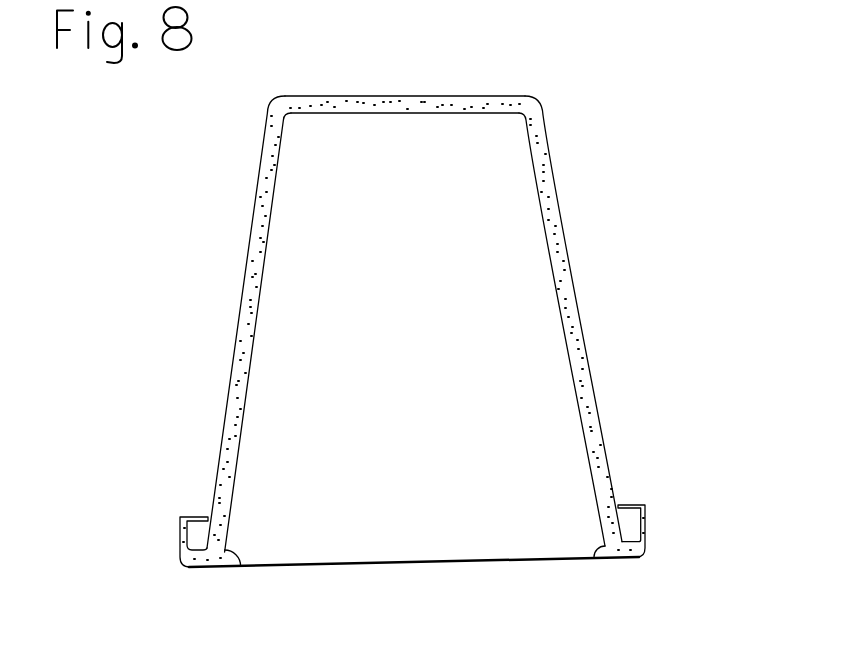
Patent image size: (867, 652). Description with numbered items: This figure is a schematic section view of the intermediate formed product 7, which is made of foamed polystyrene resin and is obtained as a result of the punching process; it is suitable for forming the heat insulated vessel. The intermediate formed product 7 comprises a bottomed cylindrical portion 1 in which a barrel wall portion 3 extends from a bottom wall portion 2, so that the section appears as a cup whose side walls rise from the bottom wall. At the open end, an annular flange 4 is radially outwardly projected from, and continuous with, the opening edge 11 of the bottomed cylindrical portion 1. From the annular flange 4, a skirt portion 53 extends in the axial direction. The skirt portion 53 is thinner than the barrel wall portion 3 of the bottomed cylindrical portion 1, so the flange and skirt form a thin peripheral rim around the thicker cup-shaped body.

The bottomed cylindrical portion 1 is at (430, 279).
The bottom wall portion 2 is at (405, 62).
The barrel wall portion 3 is at (577, 330).
The annular flange 4 is at (628, 558).
The intermediate formed product 7 is at (449, 95).
The opening edge 11 is at (232, 562).
The skirt portion 53 is at (646, 521).